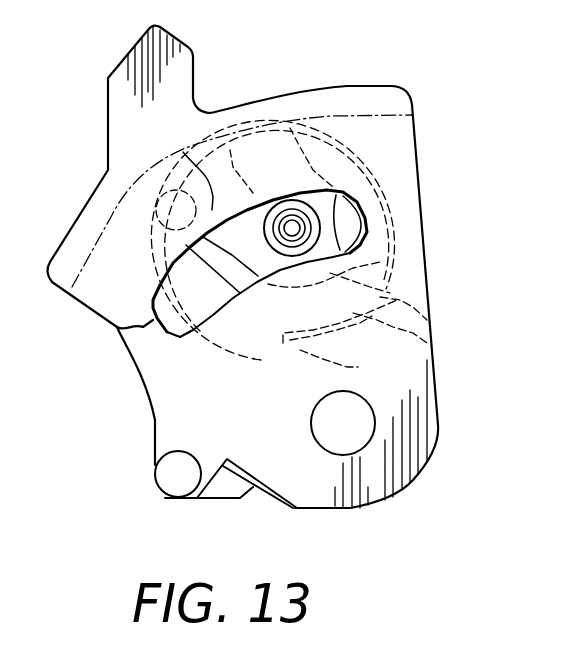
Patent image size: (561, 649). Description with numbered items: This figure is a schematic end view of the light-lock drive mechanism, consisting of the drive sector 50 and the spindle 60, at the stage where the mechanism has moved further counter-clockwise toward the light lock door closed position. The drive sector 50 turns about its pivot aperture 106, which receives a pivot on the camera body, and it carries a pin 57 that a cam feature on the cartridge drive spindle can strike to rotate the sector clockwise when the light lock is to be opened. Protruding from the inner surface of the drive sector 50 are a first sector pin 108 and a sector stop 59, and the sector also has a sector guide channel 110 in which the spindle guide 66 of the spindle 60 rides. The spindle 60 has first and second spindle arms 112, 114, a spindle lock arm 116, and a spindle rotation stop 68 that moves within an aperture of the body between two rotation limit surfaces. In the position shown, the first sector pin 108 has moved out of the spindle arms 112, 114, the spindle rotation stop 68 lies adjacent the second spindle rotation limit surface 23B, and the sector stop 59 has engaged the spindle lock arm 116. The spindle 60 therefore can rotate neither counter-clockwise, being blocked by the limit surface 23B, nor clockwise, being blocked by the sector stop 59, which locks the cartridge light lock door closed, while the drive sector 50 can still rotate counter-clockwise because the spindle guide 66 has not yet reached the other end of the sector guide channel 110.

The drive sector 50 is at (420, 184).
The pin 57 is at (170, 497).
The sector stop 59 is at (413, 318).
The spindle 60 is at (338, 140).
The spindle guide 66 is at (330, 190).
The spindle rotation stop 68 is at (262, 338).
The pivot aperture 106 is at (367, 451).
The first sector pin 108 is at (167, 213).
The sector guide channel 110 is at (117, 327).
The first spindle arm 112 is at (183, 152).
The second spindle arm 114 is at (243, 180).
The spindle lock arm 116 is at (380, 267).
The second spindle rotation limit surface 23B is at (350, 347).